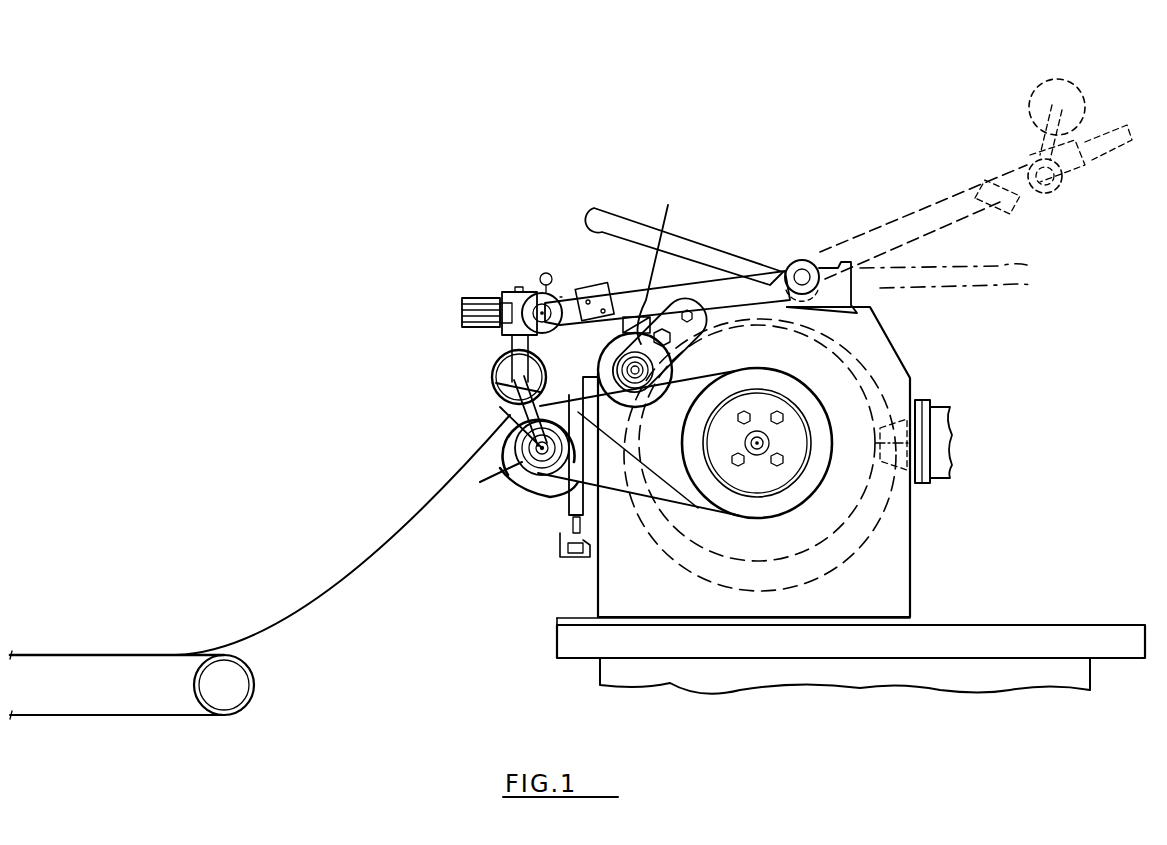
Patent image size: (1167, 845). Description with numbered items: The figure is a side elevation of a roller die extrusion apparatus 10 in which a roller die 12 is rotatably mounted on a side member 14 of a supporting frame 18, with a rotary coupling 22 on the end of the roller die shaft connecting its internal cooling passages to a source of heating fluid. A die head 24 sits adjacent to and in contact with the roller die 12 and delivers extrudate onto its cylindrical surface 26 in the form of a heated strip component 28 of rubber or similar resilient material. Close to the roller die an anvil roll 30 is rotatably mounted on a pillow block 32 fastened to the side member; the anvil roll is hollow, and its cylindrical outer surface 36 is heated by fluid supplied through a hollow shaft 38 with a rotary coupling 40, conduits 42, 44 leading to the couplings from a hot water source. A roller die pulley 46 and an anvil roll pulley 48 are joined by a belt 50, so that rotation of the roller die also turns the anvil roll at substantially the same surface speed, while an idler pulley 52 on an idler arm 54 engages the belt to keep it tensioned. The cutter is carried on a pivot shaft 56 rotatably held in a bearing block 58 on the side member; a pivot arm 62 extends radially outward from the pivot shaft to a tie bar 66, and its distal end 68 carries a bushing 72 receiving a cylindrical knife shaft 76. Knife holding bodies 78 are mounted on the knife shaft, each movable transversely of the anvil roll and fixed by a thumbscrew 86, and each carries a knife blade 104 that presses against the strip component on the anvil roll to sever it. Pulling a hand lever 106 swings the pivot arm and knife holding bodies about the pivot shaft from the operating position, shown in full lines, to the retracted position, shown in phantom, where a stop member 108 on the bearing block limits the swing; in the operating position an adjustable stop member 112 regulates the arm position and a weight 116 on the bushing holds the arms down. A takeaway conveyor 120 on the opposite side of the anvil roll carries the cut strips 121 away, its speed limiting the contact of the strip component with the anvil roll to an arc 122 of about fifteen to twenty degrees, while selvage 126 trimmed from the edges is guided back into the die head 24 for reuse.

The roller die extrusion apparatus 10 is at (928, 353).
The roller die 12 is at (912, 385).
The side member 14 is at (905, 545).
The supporting frame 18 is at (1020, 632).
The rotary coupling 22 is at (768, 443).
The die head 24 is at (948, 413).
The cylindrical surface 26 is at (900, 555).
The strip component 28 is at (865, 343).
The anvil roll 30 is at (510, 487).
The pillow block 32 is at (548, 520).
The cylindrical outer surface 36 is at (535, 496).
The hollow shaft 38 is at (538, 445).
The rotary coupling 40 is at (540, 450).
The conduit 42 is at (758, 455).
The conduit 44 is at (490, 478).
The roller die sprocket or pulley 46 is at (745, 512).
The anvil roll sprocket or pulley 48 is at (525, 400).
The belt 50 is at (633, 490).
The idler pulley 52 is at (660, 378).
The idler arm 54 is at (638, 318).
The pivot shaft 56 is at (805, 270).
The bearing block 58 is at (855, 305).
The pivot arm 62 is at (703, 285).
The tie bar 66 is at (596, 300).
The distal end 68 is at (563, 297).
The bushing 72 is at (515, 336).
The knife shaft 76 is at (1055, 180).
The knife holding body 78 is at (515, 295).
The thumbscrew 86 is at (542, 277).
The knife blade 104 is at (1072, 108).
The hand lever 106 is at (606, 222).
The stop member 108 is at (905, 268).
The adjustable stop member 112 is at (662, 232).
The weight 116 is at (470, 298).
The takeaway conveyor 120 is at (173, 718).
The cut strip 121 is at (314, 600).
The arc 122 is at (496, 383).
The selvage 126 is at (560, 543).